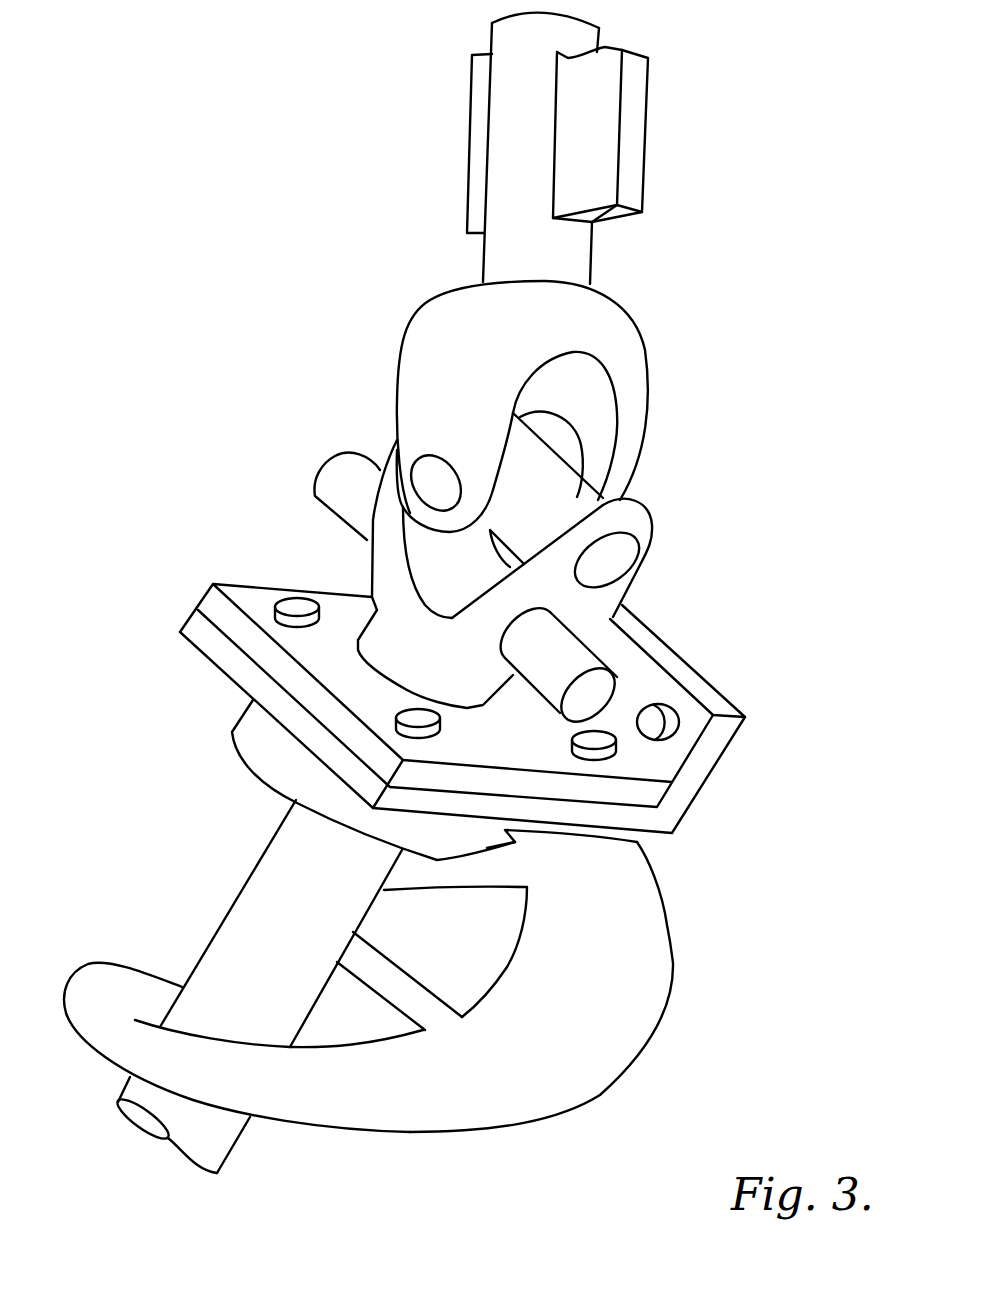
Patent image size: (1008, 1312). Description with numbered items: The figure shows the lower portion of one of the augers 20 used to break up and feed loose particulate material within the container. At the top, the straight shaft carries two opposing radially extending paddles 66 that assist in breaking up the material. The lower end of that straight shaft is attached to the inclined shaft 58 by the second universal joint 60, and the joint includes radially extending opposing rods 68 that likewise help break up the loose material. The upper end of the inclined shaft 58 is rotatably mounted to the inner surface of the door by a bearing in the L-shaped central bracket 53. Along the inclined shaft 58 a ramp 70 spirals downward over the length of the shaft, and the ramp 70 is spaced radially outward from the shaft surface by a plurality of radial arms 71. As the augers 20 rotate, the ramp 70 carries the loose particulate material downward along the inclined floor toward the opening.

The auger 20 is at (222, 238).
The paddle 66 is at (467, 157).
The second universal joint 60 is at (680, 436).
The rod 68 is at (333, 473).
The L-shaped central bracket 53 is at (692, 800).
The radial arm 71 is at (365, 960).
The ramp 70 is at (446, 1093).
The inclined shaft 58 is at (689, 970).